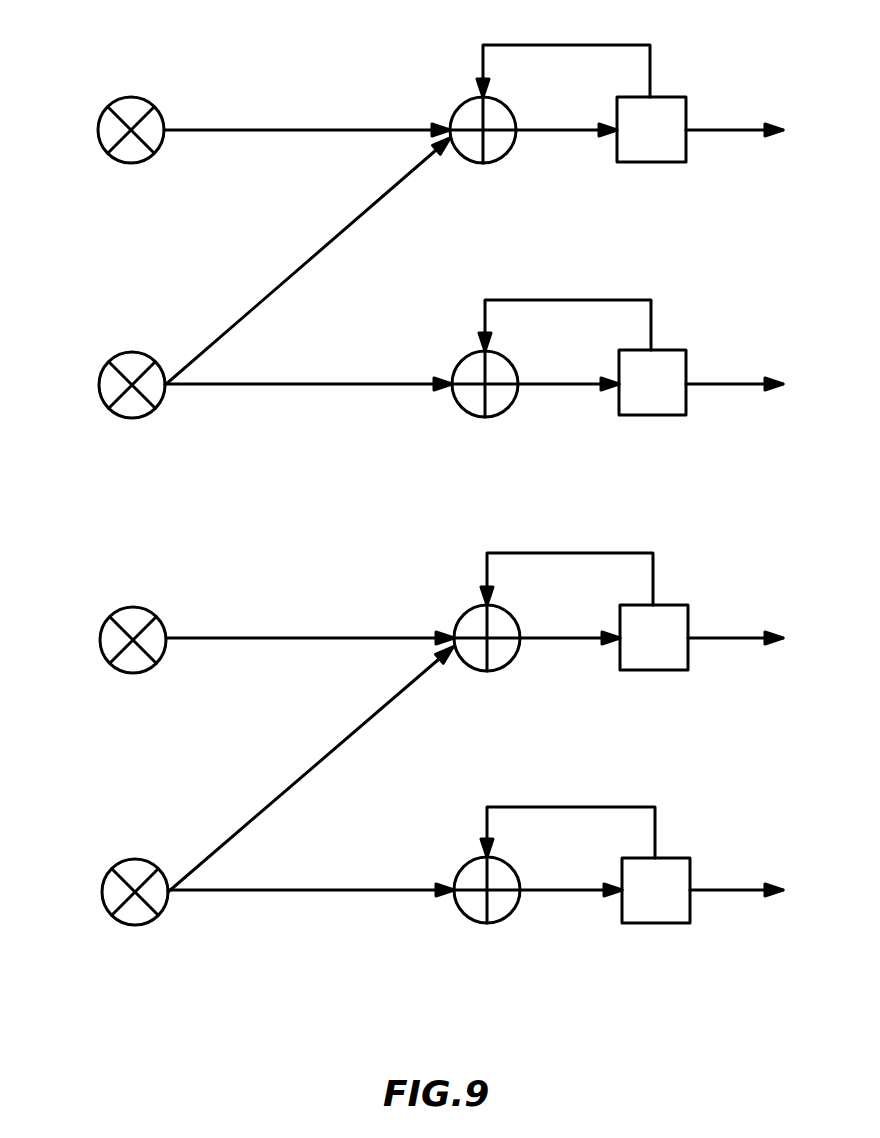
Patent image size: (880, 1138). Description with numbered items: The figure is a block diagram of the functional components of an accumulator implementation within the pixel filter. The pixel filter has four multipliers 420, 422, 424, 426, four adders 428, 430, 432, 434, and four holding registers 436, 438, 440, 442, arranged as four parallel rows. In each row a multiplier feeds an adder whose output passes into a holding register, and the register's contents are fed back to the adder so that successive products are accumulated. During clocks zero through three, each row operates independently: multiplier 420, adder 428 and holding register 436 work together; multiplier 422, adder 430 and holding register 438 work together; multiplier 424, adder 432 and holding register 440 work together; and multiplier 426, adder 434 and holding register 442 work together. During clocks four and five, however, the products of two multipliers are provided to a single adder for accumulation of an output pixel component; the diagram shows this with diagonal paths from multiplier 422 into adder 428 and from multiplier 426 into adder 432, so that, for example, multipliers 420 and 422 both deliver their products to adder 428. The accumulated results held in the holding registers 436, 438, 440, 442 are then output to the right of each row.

The multiplier 420 is at (131, 97).
The multiplier 422 is at (132, 352).
The multiplier 424 is at (133, 607).
The multiplier 426 is at (135, 859).
The adder 428 is at (510, 108).
The adder 430 is at (512, 362).
The adder 432 is at (514, 616).
The adder 434 is at (514, 868).
The holding register 436 is at (657, 97).
The holding register 438 is at (658, 350).
The holding register 440 is at (660, 605).
The holding register 442 is at (662, 858).